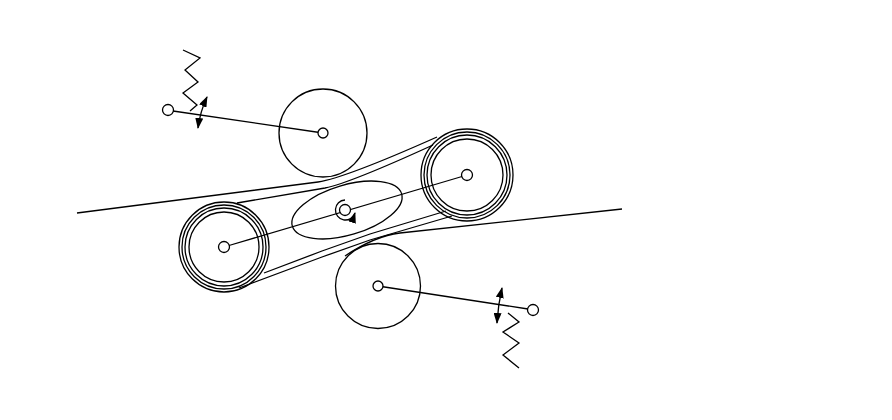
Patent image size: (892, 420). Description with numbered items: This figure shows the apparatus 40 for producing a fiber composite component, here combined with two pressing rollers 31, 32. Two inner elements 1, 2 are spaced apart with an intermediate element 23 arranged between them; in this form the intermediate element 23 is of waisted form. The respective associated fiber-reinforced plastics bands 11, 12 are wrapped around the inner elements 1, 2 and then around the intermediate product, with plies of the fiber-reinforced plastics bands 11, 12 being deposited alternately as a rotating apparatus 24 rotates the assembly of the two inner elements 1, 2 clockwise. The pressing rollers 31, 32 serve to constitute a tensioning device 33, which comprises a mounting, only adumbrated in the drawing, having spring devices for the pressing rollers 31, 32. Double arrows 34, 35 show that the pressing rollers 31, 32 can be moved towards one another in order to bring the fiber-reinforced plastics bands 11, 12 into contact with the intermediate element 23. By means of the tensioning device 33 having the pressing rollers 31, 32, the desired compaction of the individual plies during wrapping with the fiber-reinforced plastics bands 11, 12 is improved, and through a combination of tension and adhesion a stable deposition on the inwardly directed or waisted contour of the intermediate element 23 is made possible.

The inner element 1 is at (203, 270).
The inner element 2 is at (482, 160).
The fiber-reinforced plastics band 11 is at (95, 213).
The fiber-reinforced plastics band 12 is at (607, 210).
The intermediate element 23 is at (408, 165).
The rotating apparatus 24 is at (317, 240).
The pressing roller 31 is at (309, 92).
The pressing roller 32 is at (377, 314).
The tensioning device 33 is at (362, 77).
The double arrow 34 is at (210, 96).
The double arrow 35 is at (498, 300).
The apparatus 40 is at (140, 162).